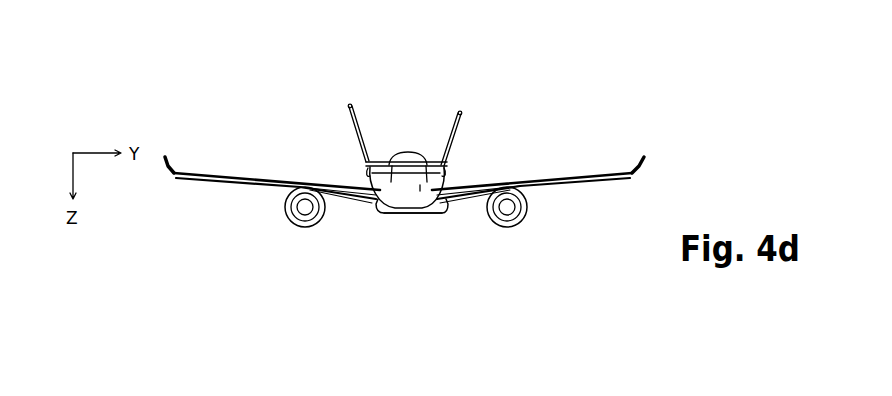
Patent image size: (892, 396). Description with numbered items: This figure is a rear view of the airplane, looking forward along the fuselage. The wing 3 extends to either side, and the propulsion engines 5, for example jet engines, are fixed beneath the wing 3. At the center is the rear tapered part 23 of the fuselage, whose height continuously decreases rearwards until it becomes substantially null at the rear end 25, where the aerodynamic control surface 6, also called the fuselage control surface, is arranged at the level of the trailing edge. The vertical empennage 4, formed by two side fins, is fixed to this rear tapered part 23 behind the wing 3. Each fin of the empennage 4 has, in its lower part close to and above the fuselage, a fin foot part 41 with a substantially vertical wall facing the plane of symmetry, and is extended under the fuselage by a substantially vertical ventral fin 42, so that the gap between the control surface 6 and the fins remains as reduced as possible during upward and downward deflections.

The wing 3 is at (590, 174).
The vertical empennage 4 is at (350, 105).
The propulsion engines 5 is at (311, 224).
The aerodynamic control surface 6 is at (380, 208).
The rear tapered part 23 is at (418, 213).
The rear end 25 is at (428, 162).
The fin foot part 41 is at (447, 170).
The ventral fin 42 is at (447, 181).